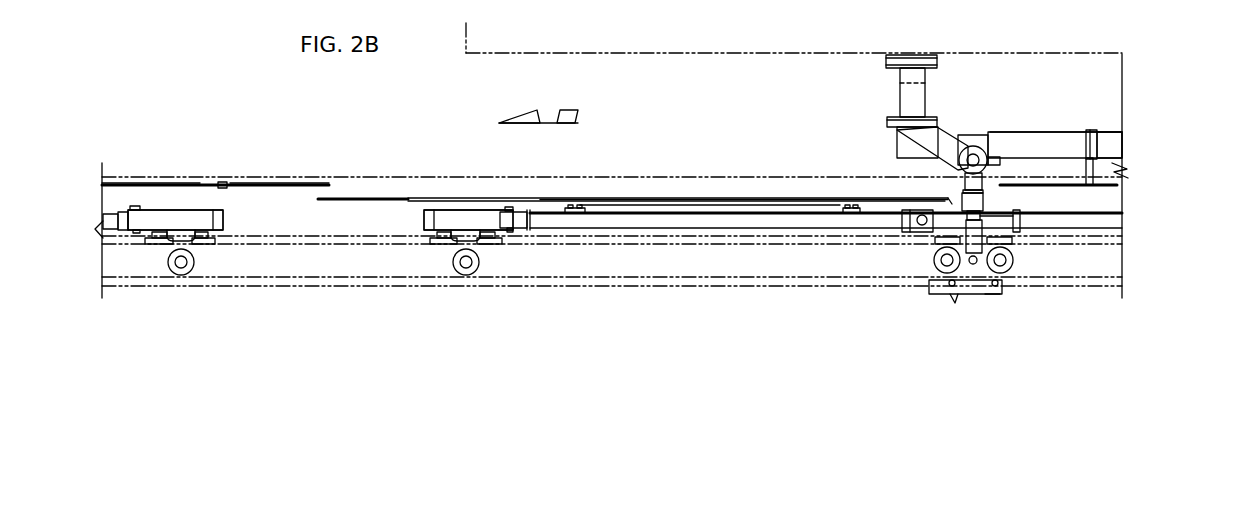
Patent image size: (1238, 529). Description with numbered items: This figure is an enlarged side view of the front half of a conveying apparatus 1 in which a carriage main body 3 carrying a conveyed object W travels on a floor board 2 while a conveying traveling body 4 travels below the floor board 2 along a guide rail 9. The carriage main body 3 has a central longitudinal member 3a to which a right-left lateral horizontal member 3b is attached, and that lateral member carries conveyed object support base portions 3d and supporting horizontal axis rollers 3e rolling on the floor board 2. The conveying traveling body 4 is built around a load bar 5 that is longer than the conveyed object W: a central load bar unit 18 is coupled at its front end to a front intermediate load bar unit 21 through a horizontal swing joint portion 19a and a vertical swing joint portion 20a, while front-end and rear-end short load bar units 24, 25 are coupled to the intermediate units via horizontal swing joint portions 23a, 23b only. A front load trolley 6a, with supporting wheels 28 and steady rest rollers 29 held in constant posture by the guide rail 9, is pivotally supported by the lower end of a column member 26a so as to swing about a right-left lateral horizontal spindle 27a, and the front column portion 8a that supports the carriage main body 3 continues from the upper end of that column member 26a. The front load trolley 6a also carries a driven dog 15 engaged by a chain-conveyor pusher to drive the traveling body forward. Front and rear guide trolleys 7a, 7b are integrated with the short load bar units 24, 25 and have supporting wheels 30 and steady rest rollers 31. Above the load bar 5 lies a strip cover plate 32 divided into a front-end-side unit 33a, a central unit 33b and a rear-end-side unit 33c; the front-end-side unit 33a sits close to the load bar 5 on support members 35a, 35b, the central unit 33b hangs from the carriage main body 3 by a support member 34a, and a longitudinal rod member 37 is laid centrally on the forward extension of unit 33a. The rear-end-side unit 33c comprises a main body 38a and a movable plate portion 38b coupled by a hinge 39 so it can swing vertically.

The conveying apparatus 1 is at (1007, 129).
The floor board 2 is at (753, 177).
The carriage main body 3 is at (1069, 130).
The central longitudinal member 3a is at (1113, 147).
The right-left lateral horizontal member 3b is at (905, 98).
The conveyed object support base portion 3d is at (912, 55).
The supporting horizontal axis roller 3e is at (975, 147).
The conveying traveling body 4 is at (800, 212).
The load bar 5 is at (632, 212).
The front load trolley 6a is at (993, 298).
The front guide trolley 7a is at (472, 221).
The rear guide trolley 7b is at (180, 217).
The front column portion 8a is at (978, 182).
The guide rail 9 is at (320, 262).
The driven dog 15 is at (952, 295).
The central load bar unit 18 is at (1115, 222).
The horizontal swing joint portion 19a is at (975, 214).
The vertical swing joint portion 20a is at (903, 222).
The front intermediate load bar unit 21 is at (670, 224).
The horizontal swing joint portion 23a is at (509, 224).
The horizontal swing joint portion 23b is at (135, 207).
The front-end short load bar unit 24 is at (468, 220).
The rear-end short load bar unit 25 is at (175, 220).
The column member 26a is at (973, 238).
The right-left lateral horizontal spindle 27a is at (973, 264).
The supporting wheel 28 is at (937, 265).
The steady rest roller 29 is at (943, 243).
The supporting wheel 30 is at (184, 274).
The steady rest roller 31 is at (157, 247).
The strip cover plate 32 is at (700, 198).
The front-end-side strip cover plate unit 33a is at (737, 206).
The central strip cover plate unit 33b is at (1100, 185).
The rear-end-side strip cover plate unit 33c is at (257, 185).
The support member 34a is at (1082, 170).
The support member 35a is at (563, 207).
The support member 35b is at (848, 205).
The longitudinal rod member 37 is at (377, 198).
The main body 38a is at (121, 182).
The movable plate portion 38b is at (290, 183).
The hinge 39 is at (222, 186).
The conveyed object W is at (597, 105).